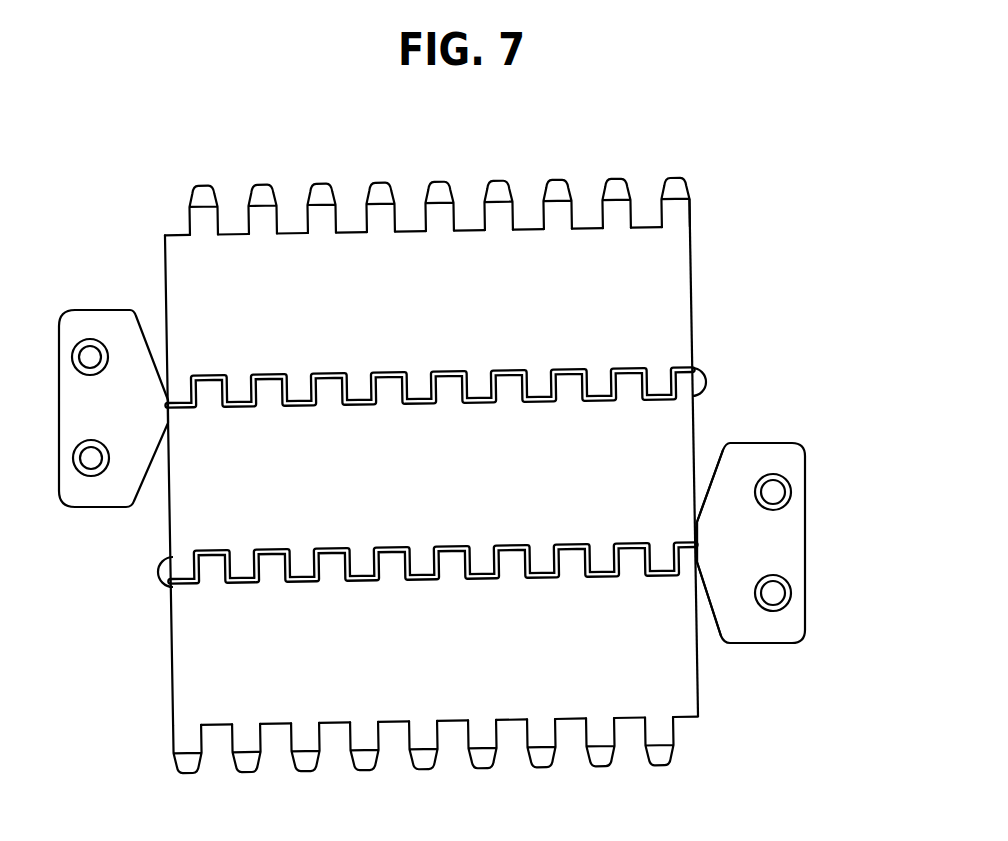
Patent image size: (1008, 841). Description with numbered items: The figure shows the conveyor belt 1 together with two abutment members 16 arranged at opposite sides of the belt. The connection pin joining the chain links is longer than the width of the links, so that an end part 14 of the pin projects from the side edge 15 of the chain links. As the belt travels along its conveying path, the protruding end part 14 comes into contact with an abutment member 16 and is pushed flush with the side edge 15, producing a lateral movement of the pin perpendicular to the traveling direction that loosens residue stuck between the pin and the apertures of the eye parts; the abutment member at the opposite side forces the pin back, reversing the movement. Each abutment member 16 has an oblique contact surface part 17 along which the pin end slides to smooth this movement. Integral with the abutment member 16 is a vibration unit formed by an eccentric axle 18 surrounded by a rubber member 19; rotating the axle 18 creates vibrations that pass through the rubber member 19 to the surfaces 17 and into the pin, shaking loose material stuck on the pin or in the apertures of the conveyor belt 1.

The conveyor belt 1 is at (471, 427).
The end part of the connection pin 14 is at (708, 368).
The side edge 15 is at (693, 308).
The abutment member 16 is at (459, 475).
The oblique contact surface part 17 is at (708, 461).
The eccentric axle 18 is at (773, 488).
The rubber member 19 is at (789, 505).